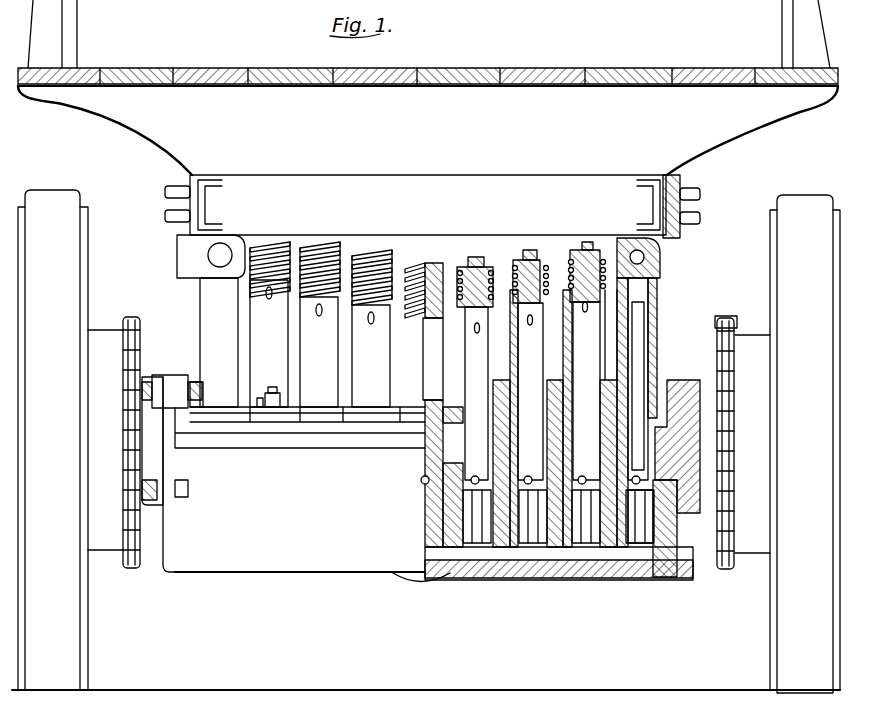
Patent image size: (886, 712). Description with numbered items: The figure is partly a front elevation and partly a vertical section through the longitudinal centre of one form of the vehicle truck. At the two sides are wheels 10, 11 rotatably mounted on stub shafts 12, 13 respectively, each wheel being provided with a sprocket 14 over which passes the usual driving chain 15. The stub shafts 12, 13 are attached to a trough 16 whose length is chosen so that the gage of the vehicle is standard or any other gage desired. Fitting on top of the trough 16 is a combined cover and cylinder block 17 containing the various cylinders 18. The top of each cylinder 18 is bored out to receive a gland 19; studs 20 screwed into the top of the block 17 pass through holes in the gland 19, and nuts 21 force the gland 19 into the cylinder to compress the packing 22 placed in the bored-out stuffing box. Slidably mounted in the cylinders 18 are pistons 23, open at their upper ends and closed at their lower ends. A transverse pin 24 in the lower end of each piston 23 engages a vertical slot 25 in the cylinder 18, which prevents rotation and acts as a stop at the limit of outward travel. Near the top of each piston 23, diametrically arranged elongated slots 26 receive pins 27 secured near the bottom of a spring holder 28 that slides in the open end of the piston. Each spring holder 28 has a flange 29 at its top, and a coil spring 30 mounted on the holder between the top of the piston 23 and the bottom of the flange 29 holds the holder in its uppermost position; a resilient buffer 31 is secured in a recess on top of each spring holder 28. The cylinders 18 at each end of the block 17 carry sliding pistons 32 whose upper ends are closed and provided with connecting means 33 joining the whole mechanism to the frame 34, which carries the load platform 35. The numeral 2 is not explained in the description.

The cartridge 2 is at (632, 552).
The wheel 10 is at (88, 665).
The wheel 11 is at (772, 665).
The stub shaft 12 is at (147, 433).
The stub shaft 13 is at (123, 322).
The sprocket 14 is at (128, 570).
The driving chain 15 is at (734, 325).
The trough 16 is at (297, 573).
The combined cover and cylinder block 17 is at (358, 432).
The cylinder 18 is at (573, 537).
The gland 19 is at (207, 407).
The stud 20 is at (284, 395).
The nut 21 is at (262, 390).
The packing 22 is at (606, 314).
The piston 23 is at (372, 373).
The transverse pin 24 is at (463, 490).
The vertical slot 25 is at (473, 547).
The elongated slot 26 is at (355, 237).
The pin 27 is at (490, 258).
The spring holder 28 is at (425, 263).
The flange 29 is at (497, 250).
The coil spring 30 is at (410, 237).
The resilient buffer 31 is at (320, 237).
The piston 32 is at (208, 303).
The connecting means 33 is at (640, 278).
The frame 34 is at (597, 193).
The load platform 35 is at (677, 18).